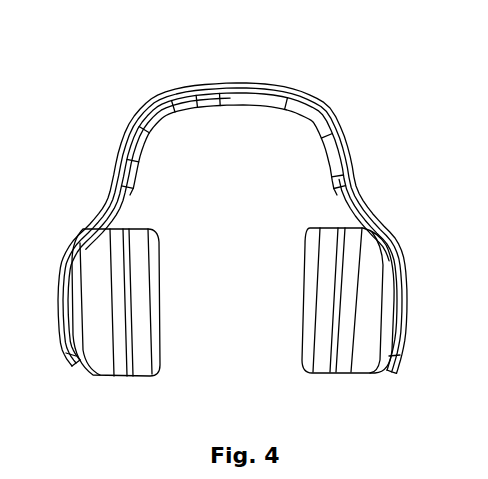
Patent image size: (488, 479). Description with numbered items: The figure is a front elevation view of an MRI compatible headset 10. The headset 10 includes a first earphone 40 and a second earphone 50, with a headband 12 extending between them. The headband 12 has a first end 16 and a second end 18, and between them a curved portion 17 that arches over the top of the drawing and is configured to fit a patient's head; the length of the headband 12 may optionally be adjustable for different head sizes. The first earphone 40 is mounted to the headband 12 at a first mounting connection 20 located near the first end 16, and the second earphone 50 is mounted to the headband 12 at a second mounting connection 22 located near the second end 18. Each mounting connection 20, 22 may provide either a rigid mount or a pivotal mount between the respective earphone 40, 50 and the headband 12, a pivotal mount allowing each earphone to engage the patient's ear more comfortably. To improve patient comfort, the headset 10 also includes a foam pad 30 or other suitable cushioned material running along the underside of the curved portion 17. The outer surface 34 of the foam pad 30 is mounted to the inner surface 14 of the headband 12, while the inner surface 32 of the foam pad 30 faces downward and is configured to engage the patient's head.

The MRI compatible headset 10 is at (325, 77).
The headband 12 is at (360, 206).
The inner surface of the headband 14 is at (221, 108).
The first end of the headband 16 is at (70, 367).
The curved portion of the headband 17 is at (346, 131).
The second end of the headband 18 is at (390, 366).
The first mounting connection 20 is at (58, 305).
The second mounting connection 22 is at (408, 298).
The foam pad 30 is at (275, 111).
The inner surface of the foam pad 32 is at (147, 138).
The outer surface of the foam pad 34 is at (195, 106).
The first earphone 40 is at (120, 377).
The second earphone 50 is at (338, 376).